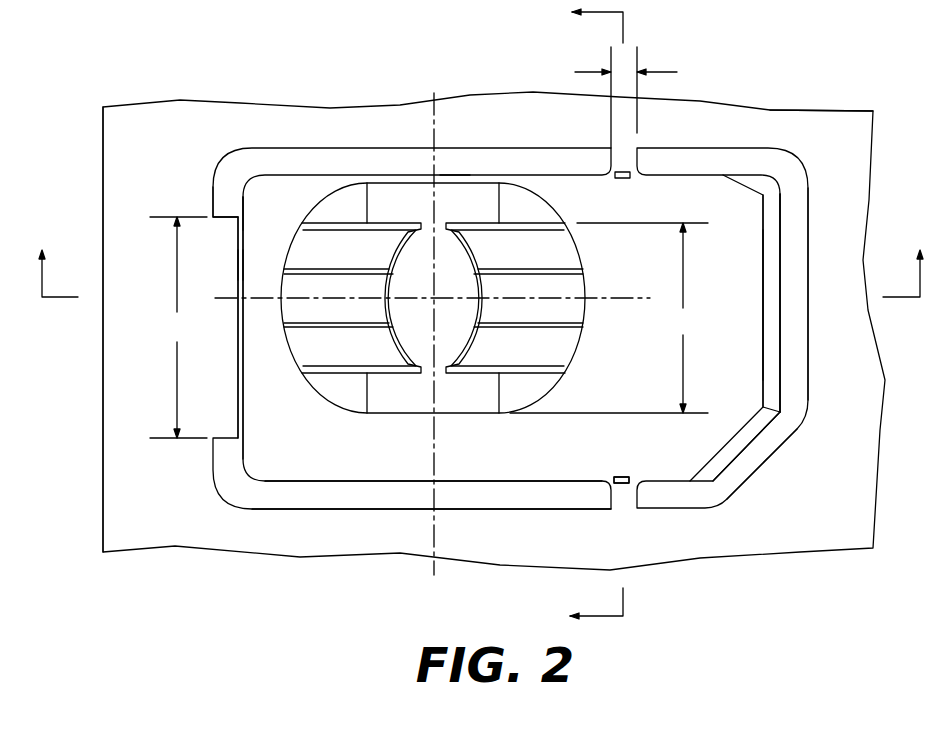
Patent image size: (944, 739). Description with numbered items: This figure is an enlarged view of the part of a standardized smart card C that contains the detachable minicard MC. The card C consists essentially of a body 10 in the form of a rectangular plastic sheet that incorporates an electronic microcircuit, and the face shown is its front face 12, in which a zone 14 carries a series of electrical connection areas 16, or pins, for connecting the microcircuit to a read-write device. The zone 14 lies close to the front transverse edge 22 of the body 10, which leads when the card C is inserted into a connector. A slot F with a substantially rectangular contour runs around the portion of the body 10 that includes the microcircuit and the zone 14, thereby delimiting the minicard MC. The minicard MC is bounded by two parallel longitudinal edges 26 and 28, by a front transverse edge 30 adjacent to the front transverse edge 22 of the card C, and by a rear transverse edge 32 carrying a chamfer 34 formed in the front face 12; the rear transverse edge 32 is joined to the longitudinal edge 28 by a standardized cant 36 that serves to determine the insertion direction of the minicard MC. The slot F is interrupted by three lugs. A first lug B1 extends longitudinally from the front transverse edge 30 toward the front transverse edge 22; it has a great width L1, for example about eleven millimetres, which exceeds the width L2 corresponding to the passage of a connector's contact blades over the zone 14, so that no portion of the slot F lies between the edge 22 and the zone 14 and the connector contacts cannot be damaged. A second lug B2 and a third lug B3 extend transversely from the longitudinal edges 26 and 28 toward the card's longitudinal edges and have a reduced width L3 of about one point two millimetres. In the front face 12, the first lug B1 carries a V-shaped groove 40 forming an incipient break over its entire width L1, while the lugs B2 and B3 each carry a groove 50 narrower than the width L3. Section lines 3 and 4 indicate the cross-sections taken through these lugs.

The section line 3- 3 is at (480, 261).
The section line 4- 4 is at (586, 315).
The body 10 is at (517, 92).
The front face 12 is at (716, 127).
The zone 14 is at (593, 290).
The areas 16 is at (565, 247).
The front transverse edge 22 is at (103, 174).
The longitudinal edge 26 is at (325, 175).
The longitudinal edge 28 is at (290, 482).
The front transverse edge 30 is at (238, 380).
The rear transverse edge 32 is at (782, 355).
The chamfer 34 is at (772, 233).
The cant 36 is at (750, 448).
The groove 40 is at (253, 240).
The grooves 50 is at (610, 468).
The first lug B1 is at (223, 262).
The second lug B2 is at (623, 157).
The third lug B3 is at (623, 497).
The width L1 is at (178, 327).
The width L2 is at (609, 318).
The width L3 is at (636, 97).
The slot F is at (453, 170).
The card C is at (800, 103).
The minicard MC is at (717, 285).